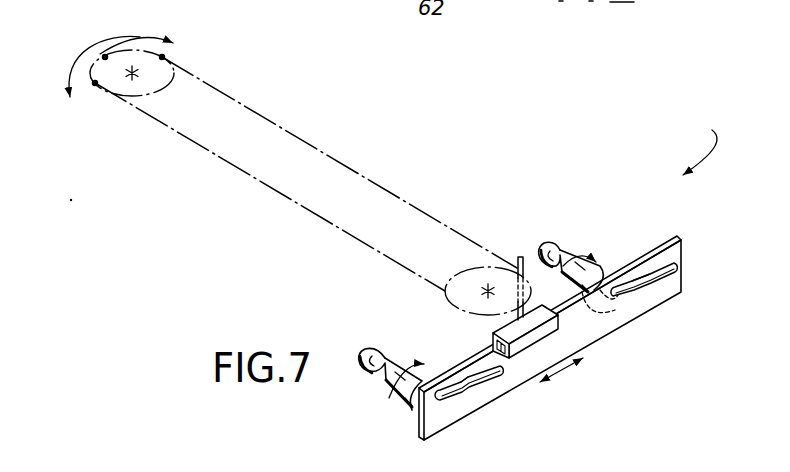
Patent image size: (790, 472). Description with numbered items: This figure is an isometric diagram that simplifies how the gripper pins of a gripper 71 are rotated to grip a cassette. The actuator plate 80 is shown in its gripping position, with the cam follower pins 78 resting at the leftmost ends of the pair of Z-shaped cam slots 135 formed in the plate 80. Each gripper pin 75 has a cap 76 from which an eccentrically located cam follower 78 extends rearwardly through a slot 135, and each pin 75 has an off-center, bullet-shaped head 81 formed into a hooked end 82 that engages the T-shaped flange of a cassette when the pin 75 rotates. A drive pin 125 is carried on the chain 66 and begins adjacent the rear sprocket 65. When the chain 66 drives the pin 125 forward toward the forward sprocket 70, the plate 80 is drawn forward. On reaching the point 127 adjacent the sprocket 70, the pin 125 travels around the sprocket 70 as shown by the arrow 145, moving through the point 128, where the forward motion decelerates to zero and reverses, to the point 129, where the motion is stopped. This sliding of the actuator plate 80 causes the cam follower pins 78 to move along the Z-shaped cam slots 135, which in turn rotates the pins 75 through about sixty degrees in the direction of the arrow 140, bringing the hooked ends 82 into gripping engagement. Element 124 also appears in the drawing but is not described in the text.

The sprocket 65 is at (459, 267).
The chain 66 is at (393, 203).
The sprocket 70 is at (165, 88).
The gripper 71 is at (700, 148).
The gripper pin 75 is at (383, 388).
The cap 76 is at (407, 406).
The cam follower 78 is at (441, 398).
The actuator plate 80 is at (583, 328).
The head 81 is at (364, 353).
The hooked end 82 is at (393, 405).
The block 124 is at (521, 328).
The pin 125 is at (522, 256).
The point 127 is at (162, 58).
The point 128 is at (105, 57).
The point 129 is at (95, 83).
The Z-shaped cam slot 135 is at (480, 390).
The arrow 140 is at (492, 327).
The arrow 145 is at (65, 103).